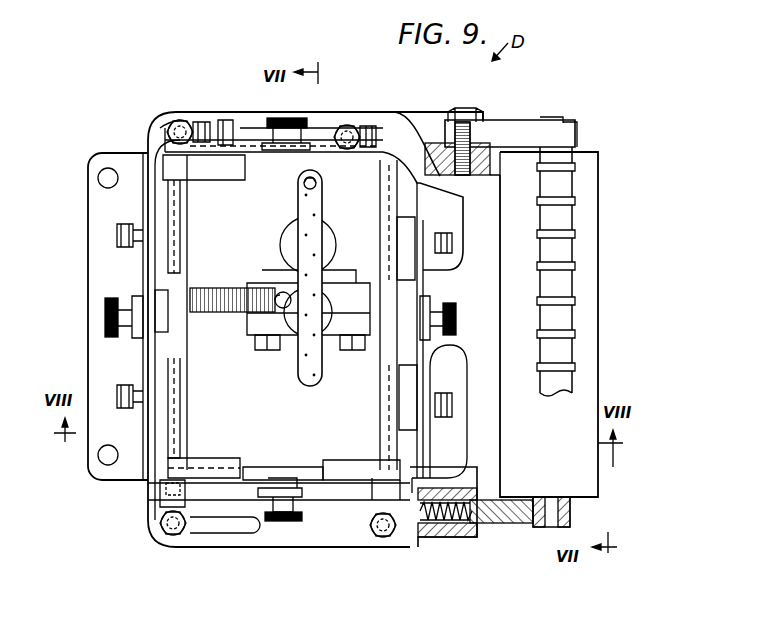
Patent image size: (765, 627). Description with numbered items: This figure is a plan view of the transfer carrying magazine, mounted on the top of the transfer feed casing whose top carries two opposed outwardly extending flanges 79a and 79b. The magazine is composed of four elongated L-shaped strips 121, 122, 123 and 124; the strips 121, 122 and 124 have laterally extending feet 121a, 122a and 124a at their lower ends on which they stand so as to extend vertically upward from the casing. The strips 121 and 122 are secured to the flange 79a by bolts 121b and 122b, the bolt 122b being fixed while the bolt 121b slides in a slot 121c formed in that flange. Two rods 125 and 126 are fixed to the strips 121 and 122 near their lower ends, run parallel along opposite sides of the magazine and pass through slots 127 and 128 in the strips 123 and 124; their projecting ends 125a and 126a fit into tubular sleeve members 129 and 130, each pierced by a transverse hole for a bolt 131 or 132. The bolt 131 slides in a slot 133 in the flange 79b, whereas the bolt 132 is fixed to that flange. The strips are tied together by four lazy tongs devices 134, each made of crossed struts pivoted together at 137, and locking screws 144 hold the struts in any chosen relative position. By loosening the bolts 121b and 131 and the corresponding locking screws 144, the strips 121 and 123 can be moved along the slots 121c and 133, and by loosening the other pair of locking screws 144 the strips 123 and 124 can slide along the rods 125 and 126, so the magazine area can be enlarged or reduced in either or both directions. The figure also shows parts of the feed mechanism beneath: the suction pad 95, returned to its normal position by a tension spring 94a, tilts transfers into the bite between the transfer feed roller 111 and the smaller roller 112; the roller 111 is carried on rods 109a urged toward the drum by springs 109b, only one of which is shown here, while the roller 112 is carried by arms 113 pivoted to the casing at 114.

The flange 79a is at (242, 118).
The flange 79b is at (308, 540).
The tension spring 94a is at (228, 290).
The suction pad 95 is at (298, 353).
The rods 109a is at (507, 525).
The springs 109b is at (457, 538).
The transfer feed roller 111 is at (549, 324).
The smaller roller 112 is at (570, 178).
The arms 113 is at (510, 137).
The pivot 114 is at (457, 147).
The L-shaped strip 121 is at (160, 180).
The foot 121a is at (160, 128).
The bolt 121b is at (178, 118).
The slot 121c is at (255, 130).
The L-shaped strip 122 is at (389, 118).
The foot 122a is at (333, 124).
The bolt 122b is at (348, 132).
The L-shaped strip 123 is at (160, 433).
The L-shaped strip 124 is at (333, 467).
The foot 124a is at (457, 383).
The rod 125 is at (183, 328).
The projecting end 125a is at (162, 490).
The rod 126 is at (387, 350).
The projecting end 126a is at (400, 485).
The slot 127 is at (180, 467).
The slot 128 is at (375, 470).
The tubular sleeve member 129 is at (160, 500).
The tubular sleeve member 130 is at (412, 538).
The bolt 131 is at (162, 533).
The bolt 132 is at (375, 532).
The slot 133 is at (237, 525).
The lazy tongs device 134 is at (257, 150).
The pivot 137 is at (142, 315).
The locking screws 144 is at (120, 317).